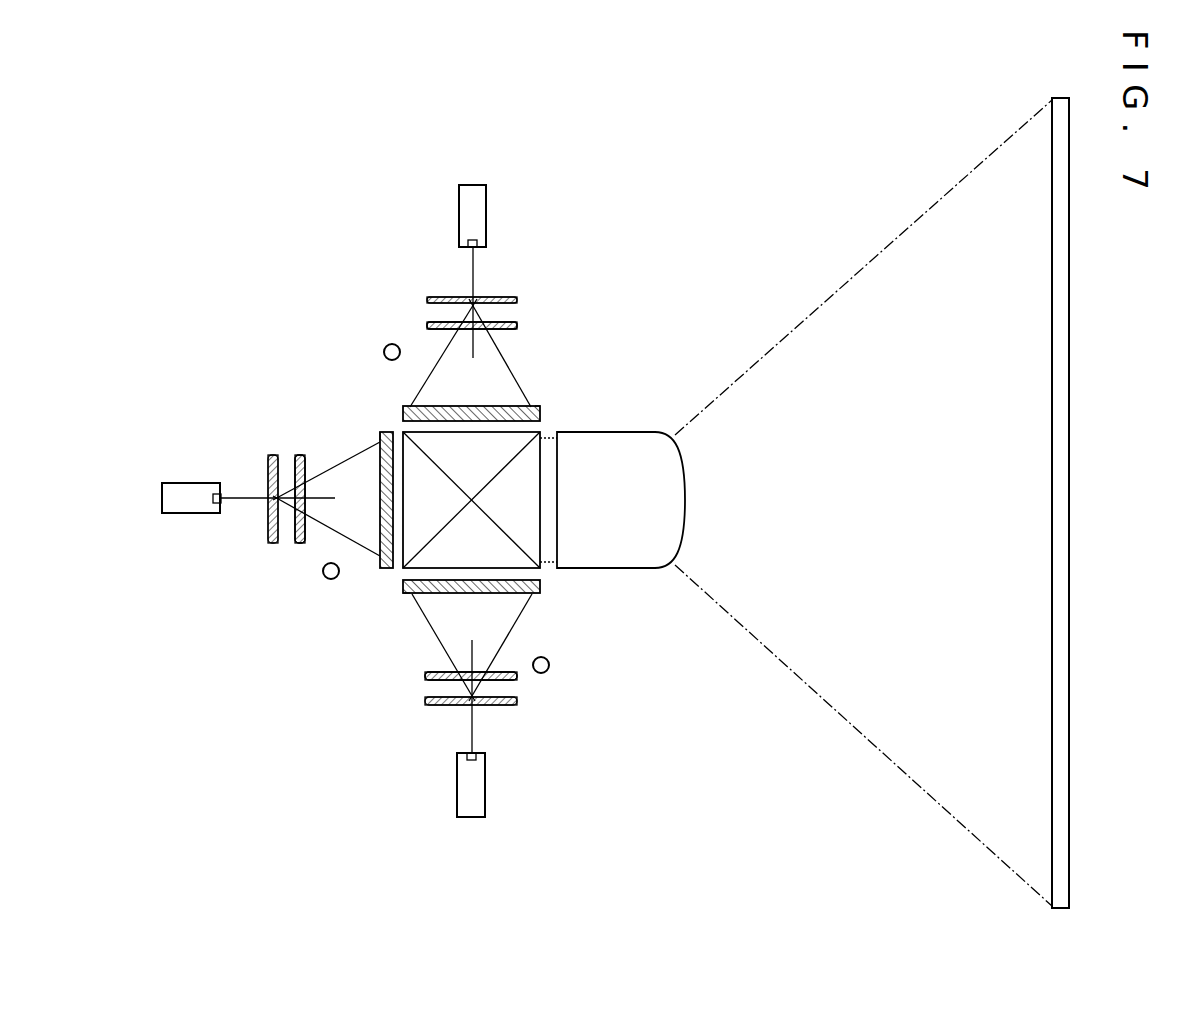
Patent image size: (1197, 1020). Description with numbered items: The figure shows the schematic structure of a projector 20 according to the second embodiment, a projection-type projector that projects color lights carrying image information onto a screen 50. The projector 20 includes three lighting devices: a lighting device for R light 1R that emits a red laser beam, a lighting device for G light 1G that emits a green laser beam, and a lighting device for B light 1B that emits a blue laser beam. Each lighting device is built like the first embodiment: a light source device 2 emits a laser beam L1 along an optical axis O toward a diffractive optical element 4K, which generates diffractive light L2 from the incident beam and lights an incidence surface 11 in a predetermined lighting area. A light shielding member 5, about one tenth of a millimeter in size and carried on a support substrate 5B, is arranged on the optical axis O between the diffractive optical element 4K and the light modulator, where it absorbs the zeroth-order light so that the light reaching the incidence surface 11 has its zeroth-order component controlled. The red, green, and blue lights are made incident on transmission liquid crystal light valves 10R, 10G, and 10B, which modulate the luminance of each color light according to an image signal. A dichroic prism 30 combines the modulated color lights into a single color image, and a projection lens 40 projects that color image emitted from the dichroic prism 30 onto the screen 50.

The projector 20 is at (168, 208).
The lighting device for B light 1B is at (418, 263).
The lighting device for G light 1G is at (240, 543).
The lighting device for R light 1R is at (530, 740).
The light source device 2 is at (475, 213).
The laser beam L1 is at (478, 264).
The diffractive optical element 4K is at (448, 312).
The support substrate 5B is at (516, 324).
The diffractive light L2 is at (523, 347).
The optical axis O is at (532, 664).
The light shielding member 5 is at (476, 331).
The light valve for B light 10B is at (403, 413).
The light valve for G light 10G is at (386, 572).
The light valve for R light 10R is at (542, 588).
The incidence surface 11 is at (540, 406).
The dichroic prism 30 is at (543, 421).
The projection lens 40 is at (632, 437).
The screen 50 is at (1052, 228).